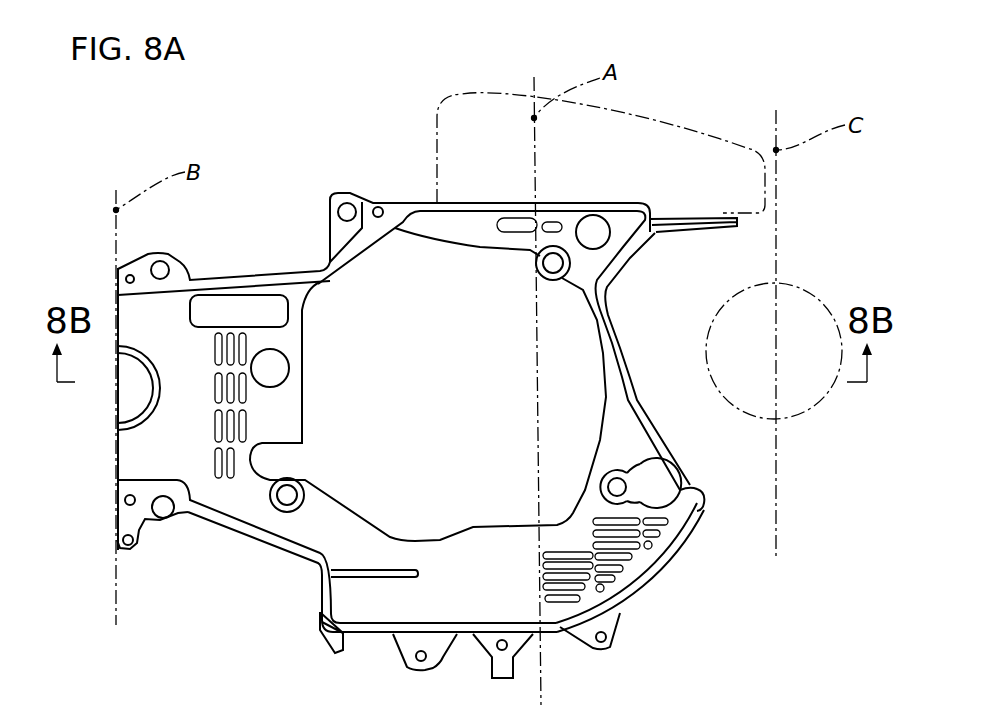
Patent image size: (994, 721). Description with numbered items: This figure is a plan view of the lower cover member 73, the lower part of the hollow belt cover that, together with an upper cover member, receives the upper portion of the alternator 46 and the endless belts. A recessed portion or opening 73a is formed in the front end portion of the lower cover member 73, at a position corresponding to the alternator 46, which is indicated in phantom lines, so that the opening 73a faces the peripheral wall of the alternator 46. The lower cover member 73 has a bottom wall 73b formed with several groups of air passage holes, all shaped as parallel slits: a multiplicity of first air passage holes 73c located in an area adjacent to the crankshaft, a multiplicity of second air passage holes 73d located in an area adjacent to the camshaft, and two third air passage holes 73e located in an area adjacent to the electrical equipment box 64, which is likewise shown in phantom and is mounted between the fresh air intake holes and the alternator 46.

The lower cover member 73 is at (298, 166).
The opening 73a is at (652, 441).
The bottom wall 73b is at (486, 586).
The first air passage holes 73c is at (658, 533).
The second air passage holes 73d is at (215, 473).
The third air passage holes 73e is at (558, 222).
The electrical equipment box 64 is at (660, 117).
The alternator 46 is at (807, 418).